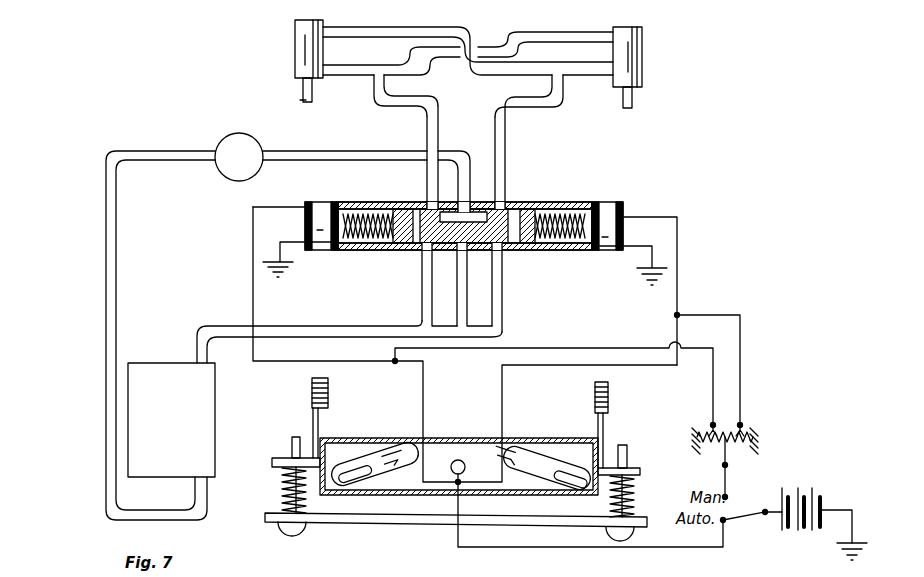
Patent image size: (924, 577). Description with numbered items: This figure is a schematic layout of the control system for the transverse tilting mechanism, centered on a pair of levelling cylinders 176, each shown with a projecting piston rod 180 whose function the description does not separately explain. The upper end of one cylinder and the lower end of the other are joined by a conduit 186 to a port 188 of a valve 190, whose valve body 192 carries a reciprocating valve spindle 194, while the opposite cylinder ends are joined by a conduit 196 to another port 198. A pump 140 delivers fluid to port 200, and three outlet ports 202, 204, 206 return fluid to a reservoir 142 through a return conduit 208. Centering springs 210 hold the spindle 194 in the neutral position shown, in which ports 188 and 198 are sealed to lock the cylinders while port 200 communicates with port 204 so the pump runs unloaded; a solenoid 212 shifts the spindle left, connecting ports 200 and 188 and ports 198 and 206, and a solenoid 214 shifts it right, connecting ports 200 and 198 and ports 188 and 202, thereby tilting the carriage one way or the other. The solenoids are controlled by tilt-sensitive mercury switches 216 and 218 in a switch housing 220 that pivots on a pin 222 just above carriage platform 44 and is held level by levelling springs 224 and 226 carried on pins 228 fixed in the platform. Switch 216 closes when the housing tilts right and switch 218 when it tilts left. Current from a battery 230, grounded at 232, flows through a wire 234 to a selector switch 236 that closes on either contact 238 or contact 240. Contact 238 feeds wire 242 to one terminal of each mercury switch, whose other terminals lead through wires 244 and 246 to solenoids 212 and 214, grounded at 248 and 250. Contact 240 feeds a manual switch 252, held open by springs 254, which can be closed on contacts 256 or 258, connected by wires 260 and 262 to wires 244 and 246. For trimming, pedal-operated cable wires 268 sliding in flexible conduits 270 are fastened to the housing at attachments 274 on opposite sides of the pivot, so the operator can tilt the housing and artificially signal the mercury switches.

The carriage platform 44 is at (376, 522).
The pump 140 is at (237, 135).
The reservoir 142 is at (161, 363).
The levelling cylinders 176 is at (295, 48).
The piston rods 180 is at (303, 97).
The conduit 186 is at (400, 106).
The port 188 is at (428, 206).
The valve 190 is at (551, 252).
The valve body 192 is at (570, 250).
The valve spindle 194 is at (538, 210).
The conduit 196 is at (535, 108).
The port 198 is at (503, 206).
The port 200 is at (470, 204).
The outlet port 202 is at (422, 253).
The outlet port 204 is at (458, 260).
The outlet port 206 is at (500, 258).
The return conduit 208 is at (215, 326).
The centering springs 210 is at (362, 210).
The solenoid 212 is at (322, 204).
The solenoid 214 is at (612, 208).
The mercury switch 216 is at (372, 455).
The mercury switch 218 is at (546, 462).
The switch housing 220 is at (447, 433).
The pin 222 is at (462, 460).
The levelling spring 224 is at (281, 492).
The levelling spring 226 is at (636, 492).
The pins 228 is at (293, 537).
The battery 230 is at (824, 498).
The ground 232 is at (862, 544).
The wire 234 is at (778, 514).
The selector switch 236 is at (748, 512).
The contact 238 is at (727, 522).
The contact 240 is at (728, 488).
The wire 242 is at (528, 547).
The wire 244 is at (255, 307).
The wire 246 is at (680, 238).
The ground 248 is at (266, 262).
The ground 250 is at (668, 268).
The manually operable switch 252 is at (731, 415).
The springs 254 is at (696, 439).
The contact 256 is at (712, 424).
The contact 258 is at (744, 424).
The wire 260 is at (698, 348).
The wire 262 is at (711, 315).
The wire 268 is at (320, 418).
The flexible conduit 270 is at (312, 385).
The attachments 274 is at (312, 450).